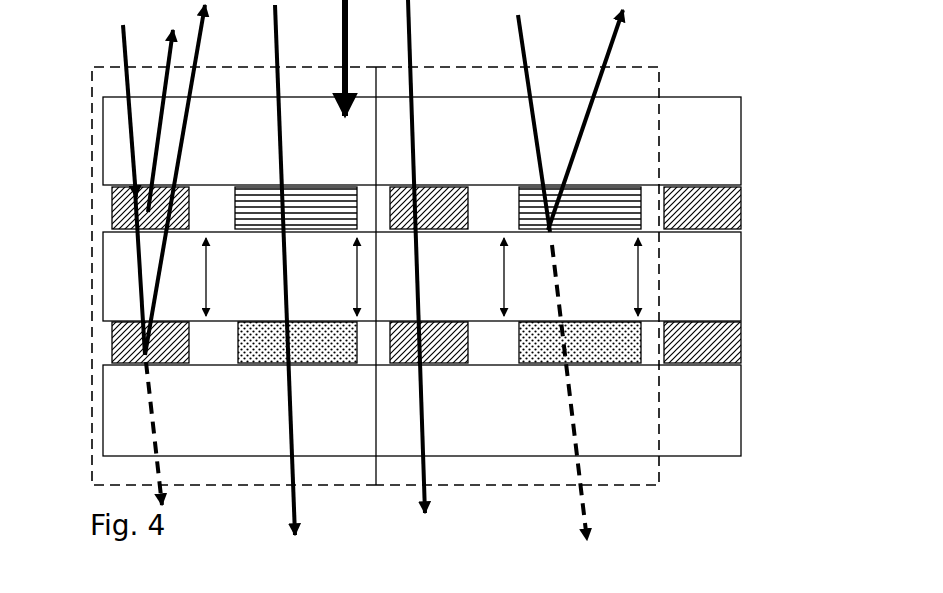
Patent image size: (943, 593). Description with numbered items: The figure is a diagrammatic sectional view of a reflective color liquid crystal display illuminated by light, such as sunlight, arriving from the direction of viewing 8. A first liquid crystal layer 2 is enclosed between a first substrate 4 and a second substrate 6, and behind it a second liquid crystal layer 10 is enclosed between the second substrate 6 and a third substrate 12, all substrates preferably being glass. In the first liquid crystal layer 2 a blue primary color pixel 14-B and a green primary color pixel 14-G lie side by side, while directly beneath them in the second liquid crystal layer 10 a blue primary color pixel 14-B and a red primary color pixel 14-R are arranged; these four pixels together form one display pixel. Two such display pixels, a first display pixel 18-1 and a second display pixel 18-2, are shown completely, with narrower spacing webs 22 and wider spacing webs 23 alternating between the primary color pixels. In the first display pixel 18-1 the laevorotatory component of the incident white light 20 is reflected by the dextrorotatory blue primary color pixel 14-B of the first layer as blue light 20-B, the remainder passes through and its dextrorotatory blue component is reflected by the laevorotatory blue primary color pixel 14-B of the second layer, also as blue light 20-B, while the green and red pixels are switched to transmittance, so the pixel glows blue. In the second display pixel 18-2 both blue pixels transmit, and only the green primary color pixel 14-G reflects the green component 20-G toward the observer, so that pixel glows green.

The first liquid crystal layer 2 is at (752, 205).
The first substrate 4 is at (422, 141).
The second substrate 6 is at (422, 276).
The direction of viewing 8 is at (349, 10).
The second liquid crystal layer 10 is at (752, 342).
The third substrate 12 is at (422, 410).
The blue primary color pixel 14-B is at (186, 185).
The green primary color pixel 14-G is at (302, 202).
The red primary color pixel 14-R is at (260, 352).
The first display pixel 18-1 is at (92, 475).
The second display pixel 18-2 is at (527, 468).
The white light 20 is at (122, 40).
The blue light 20-B is at (170, 38).
The green component 20-G is at (626, 12).
The narrower spacing web 22 is at (357, 277).
The wider spacing web 23 is at (500, 277).